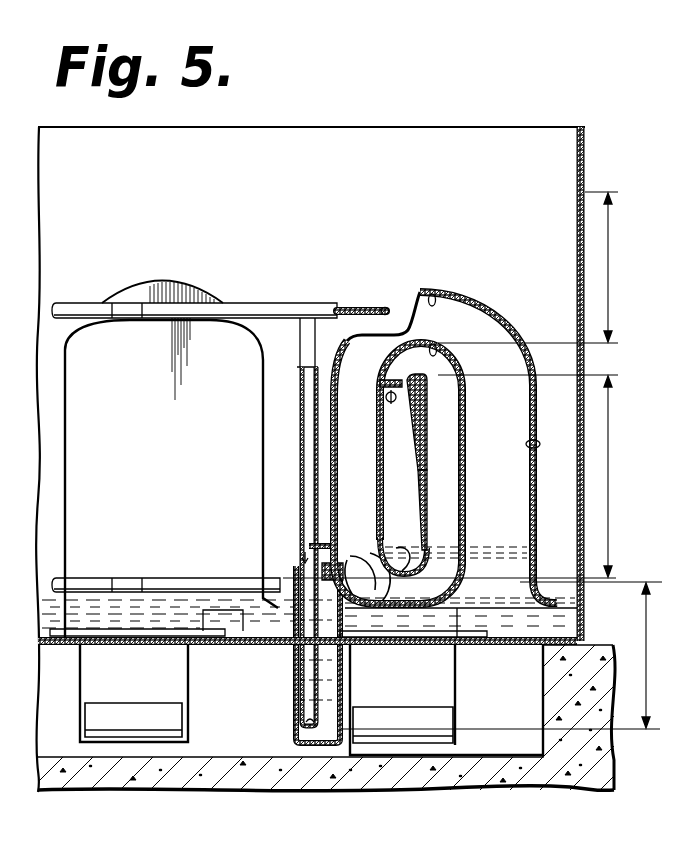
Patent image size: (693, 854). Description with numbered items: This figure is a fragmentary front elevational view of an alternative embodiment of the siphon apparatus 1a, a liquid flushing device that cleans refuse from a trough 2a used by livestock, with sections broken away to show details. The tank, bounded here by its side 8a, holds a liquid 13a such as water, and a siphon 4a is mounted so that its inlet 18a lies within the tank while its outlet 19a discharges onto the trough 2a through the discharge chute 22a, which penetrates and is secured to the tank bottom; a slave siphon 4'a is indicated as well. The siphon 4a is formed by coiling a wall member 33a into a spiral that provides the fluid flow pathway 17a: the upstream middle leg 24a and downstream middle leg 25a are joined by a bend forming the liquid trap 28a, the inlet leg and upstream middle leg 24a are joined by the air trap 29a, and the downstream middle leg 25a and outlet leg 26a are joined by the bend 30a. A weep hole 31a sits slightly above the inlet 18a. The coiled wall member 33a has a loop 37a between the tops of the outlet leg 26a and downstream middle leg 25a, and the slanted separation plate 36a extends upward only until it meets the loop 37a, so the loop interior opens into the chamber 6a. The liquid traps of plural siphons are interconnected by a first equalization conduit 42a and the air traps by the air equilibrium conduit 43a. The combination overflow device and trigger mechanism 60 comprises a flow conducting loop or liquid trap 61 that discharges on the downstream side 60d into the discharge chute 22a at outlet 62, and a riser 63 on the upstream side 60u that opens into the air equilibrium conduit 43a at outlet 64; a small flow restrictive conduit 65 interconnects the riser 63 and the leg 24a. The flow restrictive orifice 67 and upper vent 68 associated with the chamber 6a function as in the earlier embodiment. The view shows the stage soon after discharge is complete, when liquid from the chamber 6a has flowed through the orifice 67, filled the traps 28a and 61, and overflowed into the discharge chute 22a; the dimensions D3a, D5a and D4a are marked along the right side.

The siphon apparatus 1a is at (341, 126).
The trough 2a is at (205, 760).
The siphon 4a is at (389, 299).
The slave siphon 4'a is at (162, 329).
The chamber 6a is at (423, 520).
The tank side 8a is at (588, 164).
The liquid 13a is at (273, 632).
The fluid flow pathway 17a is at (526, 423).
The inlet 18a is at (232, 646).
The outlet 19a is at (180, 721).
The discharge chute 22a is at (354, 624).
The upstream middle leg 24a is at (358, 472).
The downstream middle leg 25a is at (459, 474).
The outlet leg 26a is at (393, 381).
The liquid trap 28a is at (438, 579).
The air trap 29a is at (433, 296).
The bend 30a is at (436, 353).
The weep hole 31a is at (534, 559).
The wall member 33a is at (527, 444).
The separation plate 36a is at (385, 398).
The loop 37a is at (420, 372).
The first equalization conduit 42a is at (225, 577).
The air equilibrium conduit 43a is at (238, 311).
The combination overflow device and trigger mechanism 60 is at (294, 698).
The upstream side 60u is at (298, 681).
The downstream side 60d is at (342, 673).
The liquid trap 61 is at (303, 724).
The outlet 62 is at (378, 546).
The riser 63 is at (298, 407).
The outlet 64 is at (303, 317).
The flow restrictive conduit 65 is at (319, 545).
The flow restrictive orifice 67 is at (403, 550).
The upper vent 68 is at (390, 404).
The dimension D3a is at (539, 267).
The dimension D5a is at (460, 476).
The dimension D4a is at (510, 655).